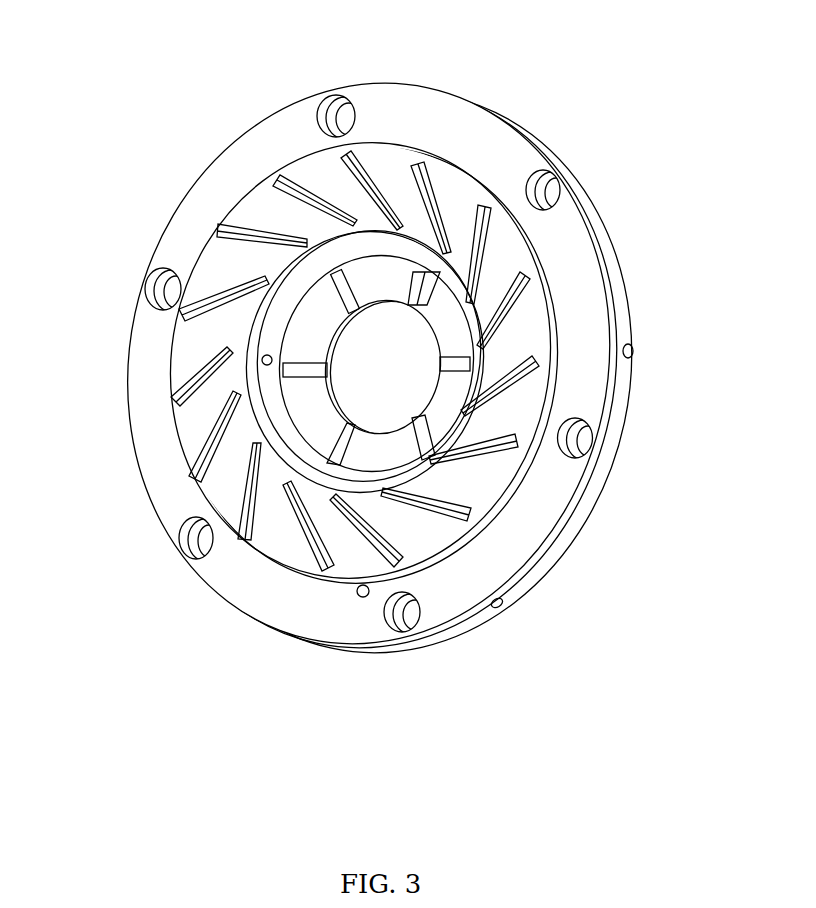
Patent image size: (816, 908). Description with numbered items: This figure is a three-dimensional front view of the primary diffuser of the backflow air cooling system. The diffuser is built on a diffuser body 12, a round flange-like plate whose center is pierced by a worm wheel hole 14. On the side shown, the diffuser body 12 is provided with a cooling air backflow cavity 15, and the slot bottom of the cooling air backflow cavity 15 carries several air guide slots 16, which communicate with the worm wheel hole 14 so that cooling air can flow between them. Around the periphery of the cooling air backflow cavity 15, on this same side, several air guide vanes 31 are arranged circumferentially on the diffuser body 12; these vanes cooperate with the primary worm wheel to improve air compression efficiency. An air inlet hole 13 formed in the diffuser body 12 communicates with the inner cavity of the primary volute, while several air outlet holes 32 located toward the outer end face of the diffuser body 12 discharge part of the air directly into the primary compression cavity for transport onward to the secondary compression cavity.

The diffuser body 12 is at (380, 368).
The air inlet hole 13 is at (307, 644).
The worm wheel hole 14 is at (453, 257).
The cooling air backflow cavity 15 is at (416, 251).
The air guide slot 16 is at (365, 265).
The air guide vane 31 is at (298, 361).
The air outlet hole 32 is at (665, 318).